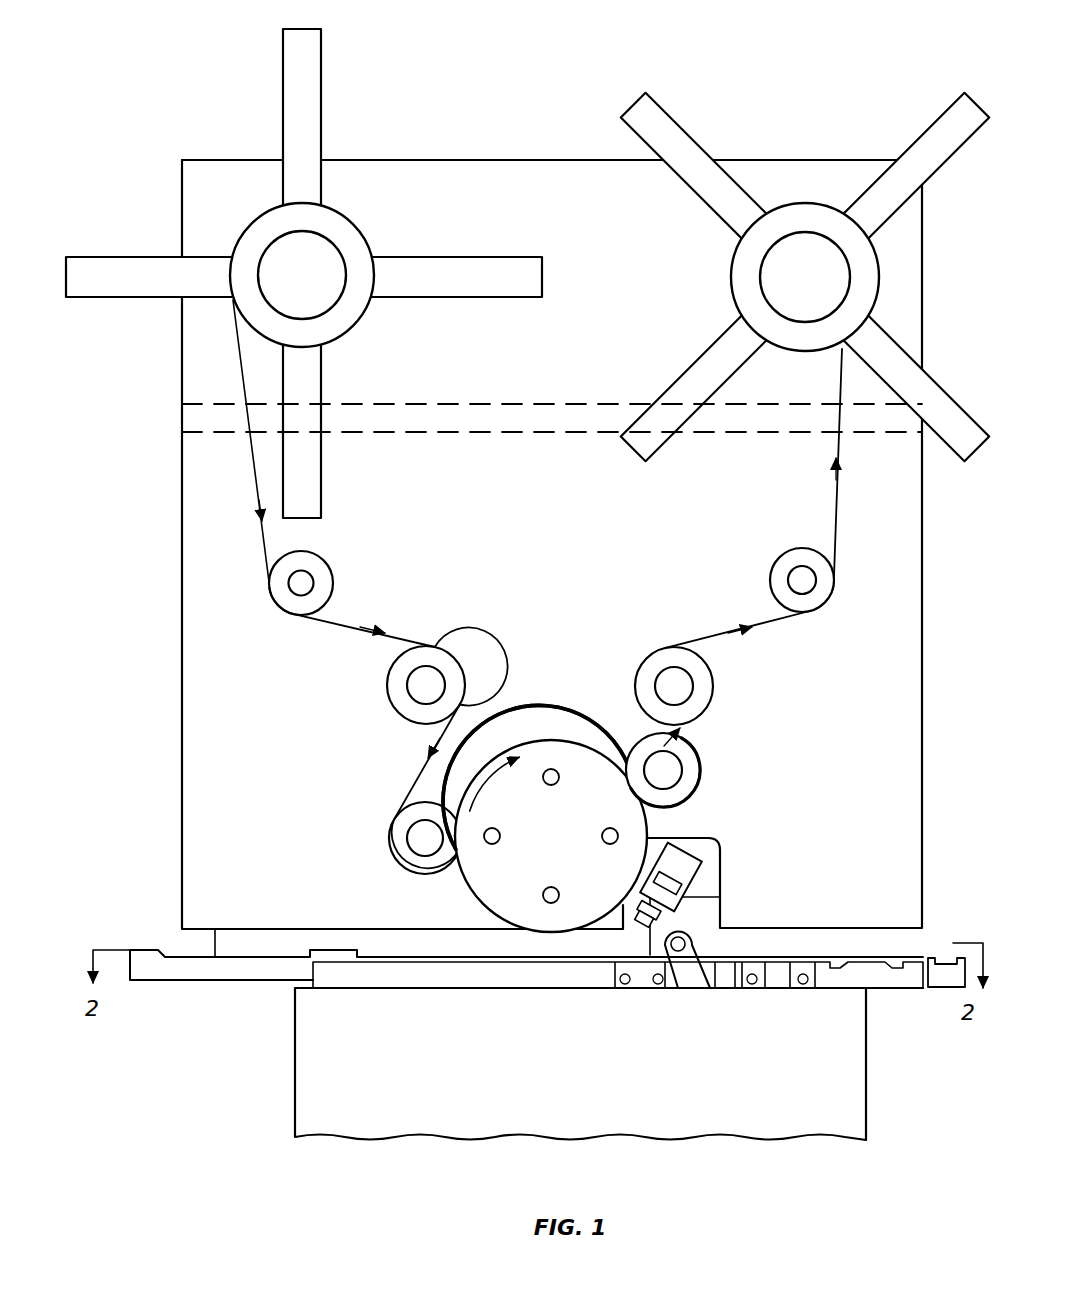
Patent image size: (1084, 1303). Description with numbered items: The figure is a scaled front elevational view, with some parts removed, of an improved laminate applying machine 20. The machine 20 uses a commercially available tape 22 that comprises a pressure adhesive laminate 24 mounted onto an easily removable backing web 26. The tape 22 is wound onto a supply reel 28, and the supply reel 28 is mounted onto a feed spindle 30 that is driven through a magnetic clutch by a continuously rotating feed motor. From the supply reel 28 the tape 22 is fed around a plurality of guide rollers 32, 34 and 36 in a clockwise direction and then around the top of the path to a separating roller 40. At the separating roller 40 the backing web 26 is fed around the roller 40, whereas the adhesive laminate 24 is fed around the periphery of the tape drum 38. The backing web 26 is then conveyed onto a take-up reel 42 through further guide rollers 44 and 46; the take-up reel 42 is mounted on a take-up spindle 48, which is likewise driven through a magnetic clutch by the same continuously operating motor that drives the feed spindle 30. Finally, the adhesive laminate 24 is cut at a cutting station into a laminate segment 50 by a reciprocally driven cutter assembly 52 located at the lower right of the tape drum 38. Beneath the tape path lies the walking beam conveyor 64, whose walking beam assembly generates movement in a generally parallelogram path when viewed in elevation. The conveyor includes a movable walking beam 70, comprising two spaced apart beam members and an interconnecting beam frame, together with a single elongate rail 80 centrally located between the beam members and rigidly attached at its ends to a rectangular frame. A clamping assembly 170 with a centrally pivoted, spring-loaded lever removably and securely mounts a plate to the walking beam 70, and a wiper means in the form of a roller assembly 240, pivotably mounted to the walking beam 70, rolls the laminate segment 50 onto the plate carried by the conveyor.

The laminate applying machine 20 is at (207, 118).
The tape 22 is at (240, 377).
The pressure adhesive laminate 24 is at (360, 632).
The backing web 26 is at (349, 625).
The supply reel 28 is at (366, 312).
The feed spindle 30 is at (330, 245).
The guide roller 32 is at (323, 567).
The guide roller 34 is at (405, 710).
The guide roller 36 is at (425, 805).
The tape drum 38 is at (478, 905).
The separating roller 40 is at (628, 742).
The take-up reel 42 is at (736, 288).
The guide roller 44 is at (709, 697).
The guide roller 46 is at (790, 555).
The take-up spindle 48 is at (797, 240).
The laminate segment 50 is at (607, 925).
The cutter assembly 52 is at (702, 878).
The walking beam conveyor 64 is at (945, 948).
The walking beam 70 is at (310, 977).
The rail 80 is at (160, 953).
The clamping assembly 170 is at (774, 998).
The roller assembly 240 is at (712, 952).